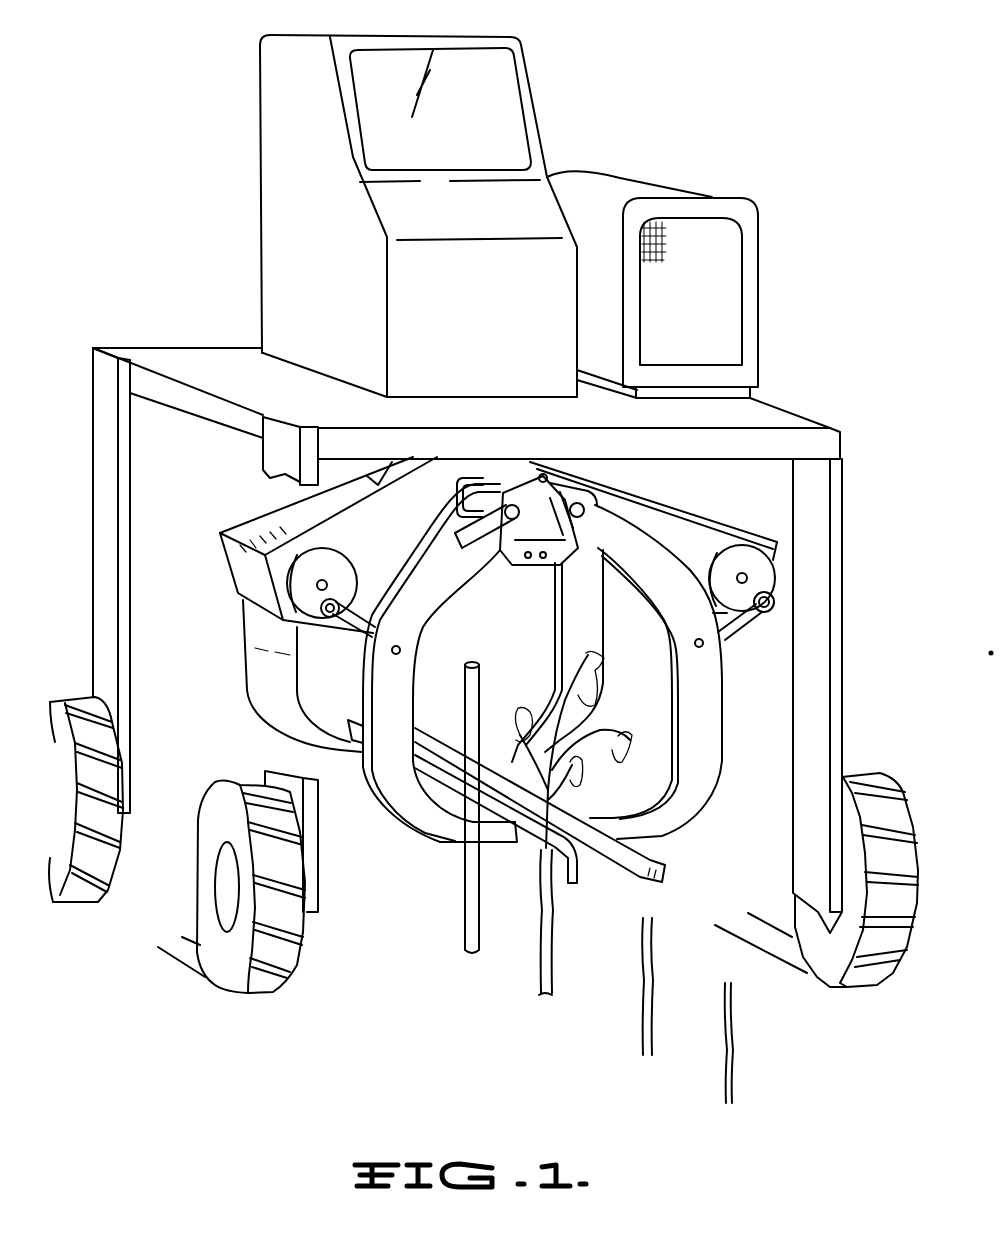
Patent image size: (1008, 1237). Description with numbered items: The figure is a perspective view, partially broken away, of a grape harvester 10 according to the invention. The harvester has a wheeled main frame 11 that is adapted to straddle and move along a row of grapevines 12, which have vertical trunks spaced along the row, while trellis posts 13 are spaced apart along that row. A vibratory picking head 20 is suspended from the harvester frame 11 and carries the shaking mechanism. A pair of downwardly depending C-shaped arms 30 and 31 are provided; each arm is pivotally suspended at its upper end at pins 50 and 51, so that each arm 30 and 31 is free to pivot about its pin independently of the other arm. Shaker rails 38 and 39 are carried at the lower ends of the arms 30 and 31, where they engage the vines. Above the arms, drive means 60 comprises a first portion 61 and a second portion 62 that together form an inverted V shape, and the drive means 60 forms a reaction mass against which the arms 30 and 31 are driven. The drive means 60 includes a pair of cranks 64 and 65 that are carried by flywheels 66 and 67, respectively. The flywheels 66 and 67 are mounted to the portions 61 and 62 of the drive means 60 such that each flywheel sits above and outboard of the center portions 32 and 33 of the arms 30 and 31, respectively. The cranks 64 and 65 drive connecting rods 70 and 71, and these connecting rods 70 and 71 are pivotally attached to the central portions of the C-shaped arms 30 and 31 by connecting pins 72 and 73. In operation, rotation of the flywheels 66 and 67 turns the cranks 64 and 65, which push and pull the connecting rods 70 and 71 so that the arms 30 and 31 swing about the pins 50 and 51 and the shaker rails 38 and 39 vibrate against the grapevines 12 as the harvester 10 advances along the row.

The grape harvester 10 is at (794, 399).
The wheeled main frame 11 is at (142, 348).
The grapevines 12 is at (642, 1010).
The trellis posts 13 is at (463, 942).
The vibratory picking head 20 is at (652, 497).
The C-shaped arm 30 is at (438, 595).
The C-shaped arm 31 is at (723, 722).
The center portion 32 is at (404, 691).
The center portion 33 is at (714, 705).
The shaker rail 38 is at (538, 845).
The shaker rail 39 is at (662, 857).
The pin 50 is at (503, 522).
The pin 51 is at (582, 516).
The drive means 60 is at (713, 512).
The first portion 61 is at (404, 548).
The second portion 62 is at (700, 550).
The crank 64 is at (329, 618).
The crank 65 is at (770, 584).
The flywheel 66 is at (300, 573).
The flywheel 67 is at (770, 573).
The connecting rod 70 is at (364, 620).
The connecting rod 71 is at (731, 631).
The connecting pin 72 is at (398, 645).
The connecting pin 73 is at (699, 639).